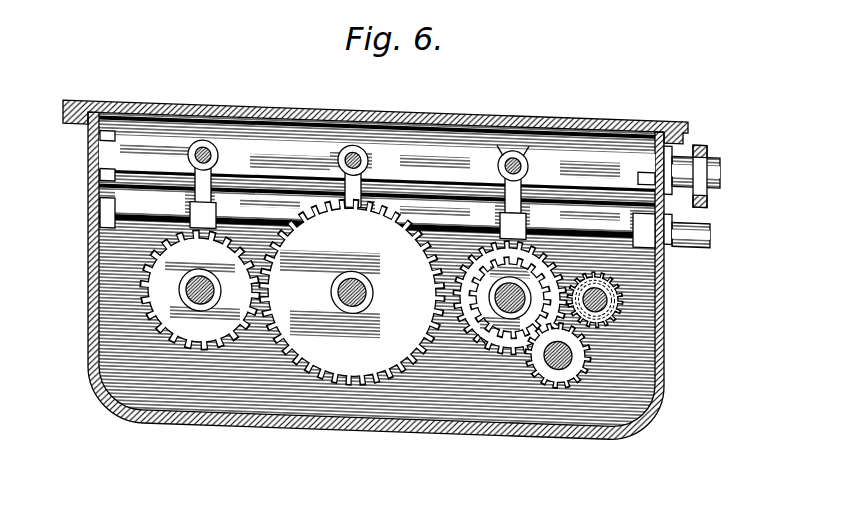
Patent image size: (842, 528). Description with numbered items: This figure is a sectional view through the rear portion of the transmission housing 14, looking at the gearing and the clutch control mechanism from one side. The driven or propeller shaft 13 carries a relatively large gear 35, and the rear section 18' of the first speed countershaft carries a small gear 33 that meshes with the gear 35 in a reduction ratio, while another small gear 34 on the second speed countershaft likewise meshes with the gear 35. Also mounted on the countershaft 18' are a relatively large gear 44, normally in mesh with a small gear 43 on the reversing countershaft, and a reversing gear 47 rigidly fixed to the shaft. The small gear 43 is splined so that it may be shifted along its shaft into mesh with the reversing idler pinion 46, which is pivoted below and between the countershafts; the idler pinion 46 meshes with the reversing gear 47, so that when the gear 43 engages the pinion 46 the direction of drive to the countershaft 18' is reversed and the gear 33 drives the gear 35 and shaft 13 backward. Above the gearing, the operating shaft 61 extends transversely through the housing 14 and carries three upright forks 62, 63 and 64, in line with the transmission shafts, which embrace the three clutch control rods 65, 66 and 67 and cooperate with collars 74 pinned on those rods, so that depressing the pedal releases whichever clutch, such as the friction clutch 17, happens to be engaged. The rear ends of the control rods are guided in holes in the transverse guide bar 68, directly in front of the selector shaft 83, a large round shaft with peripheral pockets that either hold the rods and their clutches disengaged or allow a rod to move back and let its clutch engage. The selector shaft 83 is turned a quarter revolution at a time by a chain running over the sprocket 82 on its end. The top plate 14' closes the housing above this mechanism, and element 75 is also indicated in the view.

The transmission housing 14 is at (355, 276).
The top plate of casing 14' is at (375, 110).
The selector shaft 83 is at (270, 129).
The collars 74 is at (360, 145).
The transverse guide bar 68 is at (580, 148).
The operating shaft 61 is at (138, 212).
The fork 62 is at (208, 200).
The fork 63 is at (395, 199).
The fork 64 is at (527, 192).
The clutch control rod 65 is at (203, 133).
The clutch control rod 66 is at (353, 133).
The clutch control rod 67 is at (517, 139).
The hanger arm 75 is at (502, 138).
The sprocket 82 is at (708, 125).
The friction clutch 17 is at (182, 291).
The small gear 34 is at (208, 323).
The driven shaft 13 is at (352, 291).
The large gear 35 is at (312, 341).
The rear section of the first speed countershaft 18' is at (463, 289).
The small gear 33 is at (458, 280).
The reversing gear 47 is at (478, 288).
The large gear 44 is at (480, 318).
The small gear 43 is at (630, 276).
The reversing idler pinion 46 is at (534, 360).